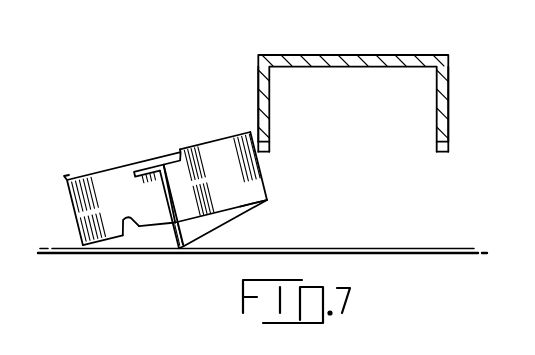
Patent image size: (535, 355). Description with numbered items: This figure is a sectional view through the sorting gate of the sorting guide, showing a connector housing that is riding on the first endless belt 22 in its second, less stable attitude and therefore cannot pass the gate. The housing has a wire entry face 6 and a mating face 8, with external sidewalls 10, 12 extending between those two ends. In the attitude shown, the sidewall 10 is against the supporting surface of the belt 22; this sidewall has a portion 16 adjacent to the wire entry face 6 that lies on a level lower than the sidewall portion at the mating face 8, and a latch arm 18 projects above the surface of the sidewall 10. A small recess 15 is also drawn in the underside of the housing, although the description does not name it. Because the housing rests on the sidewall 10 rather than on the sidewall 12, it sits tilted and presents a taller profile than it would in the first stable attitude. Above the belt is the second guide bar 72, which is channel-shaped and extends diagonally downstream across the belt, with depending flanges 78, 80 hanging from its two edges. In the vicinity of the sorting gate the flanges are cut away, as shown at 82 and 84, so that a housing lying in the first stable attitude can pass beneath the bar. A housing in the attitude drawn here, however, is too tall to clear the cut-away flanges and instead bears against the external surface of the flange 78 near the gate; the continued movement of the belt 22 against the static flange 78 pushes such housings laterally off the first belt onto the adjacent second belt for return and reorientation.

The wire entry face 6 is at (75, 213).
The mating face 8 is at (268, 178).
The external sidewall 10 is at (255, 207).
The external sidewall 12 is at (215, 140).
The notch 15 is at (127, 221).
The sidewall portion 16 is at (105, 244).
The latch arm 18 is at (204, 222).
The first endless belt 22 is at (393, 248).
The second guide bar 72 is at (342, 55).
The depending flange 78 is at (258, 96).
The depending flange 80 is at (448, 101).
The cut-away portion of flange 82 is at (272, 147).
The cut-away portion of flange 84 is at (450, 147).